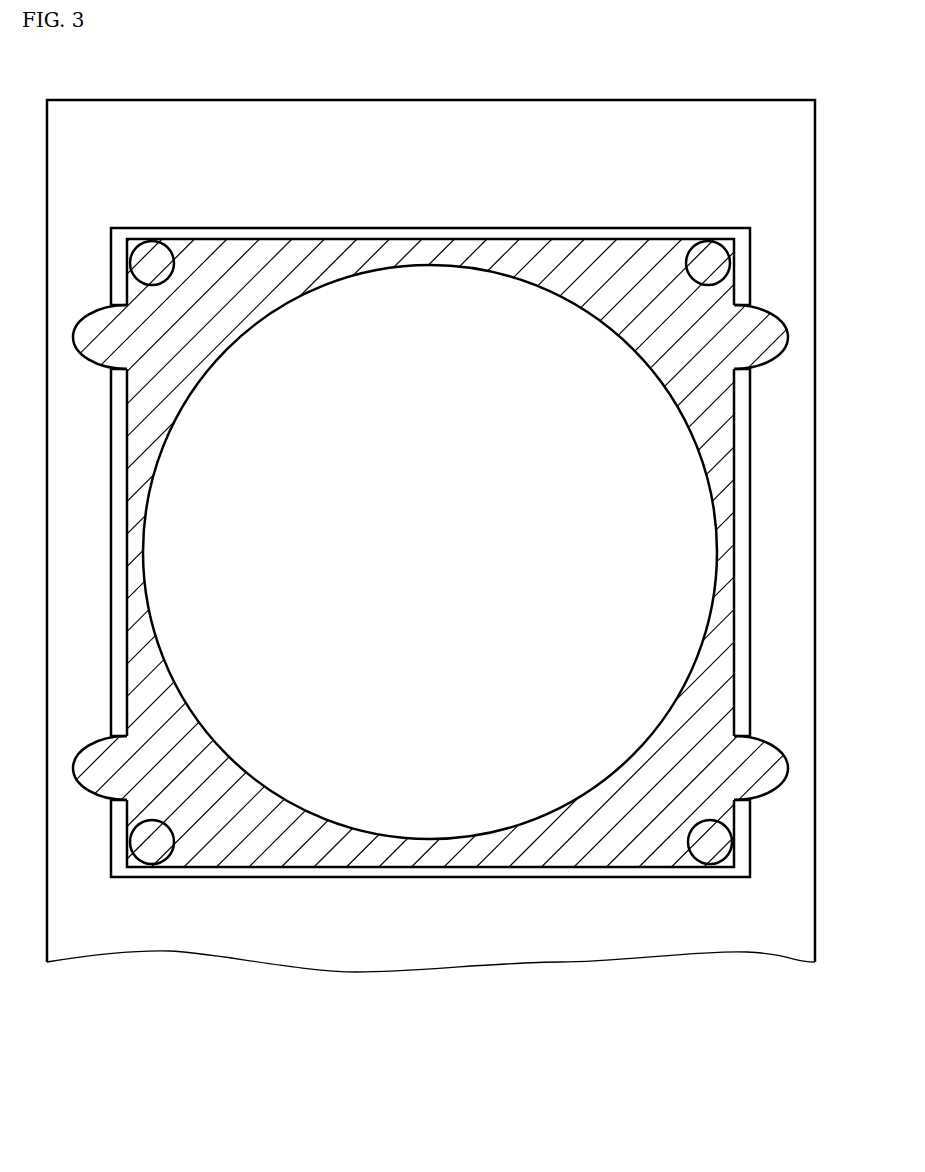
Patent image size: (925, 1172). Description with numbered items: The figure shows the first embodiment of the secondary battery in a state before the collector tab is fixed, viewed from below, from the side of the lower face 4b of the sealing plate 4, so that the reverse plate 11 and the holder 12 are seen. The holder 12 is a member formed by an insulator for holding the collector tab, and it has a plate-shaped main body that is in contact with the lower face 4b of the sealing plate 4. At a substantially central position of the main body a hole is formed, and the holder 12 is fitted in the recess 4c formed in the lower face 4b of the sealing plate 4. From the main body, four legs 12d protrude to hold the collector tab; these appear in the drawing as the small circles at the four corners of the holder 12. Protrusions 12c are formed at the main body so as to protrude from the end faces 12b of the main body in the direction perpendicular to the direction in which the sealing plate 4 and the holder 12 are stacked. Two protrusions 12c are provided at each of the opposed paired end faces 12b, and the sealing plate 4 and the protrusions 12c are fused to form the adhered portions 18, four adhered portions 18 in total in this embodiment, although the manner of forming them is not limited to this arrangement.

The sealing plate 4 is at (431, 589).
The lower face 4b is at (375, 930).
The recess 4c is at (203, 875).
The reverse plate 11 is at (474, 780).
The holder 12 is at (462, 604).
The end faces 12b is at (433, 239).
The protrusions 12c is at (93, 342).
The legs 12d is at (148, 262).
The adhered portions 18 is at (80, 302).